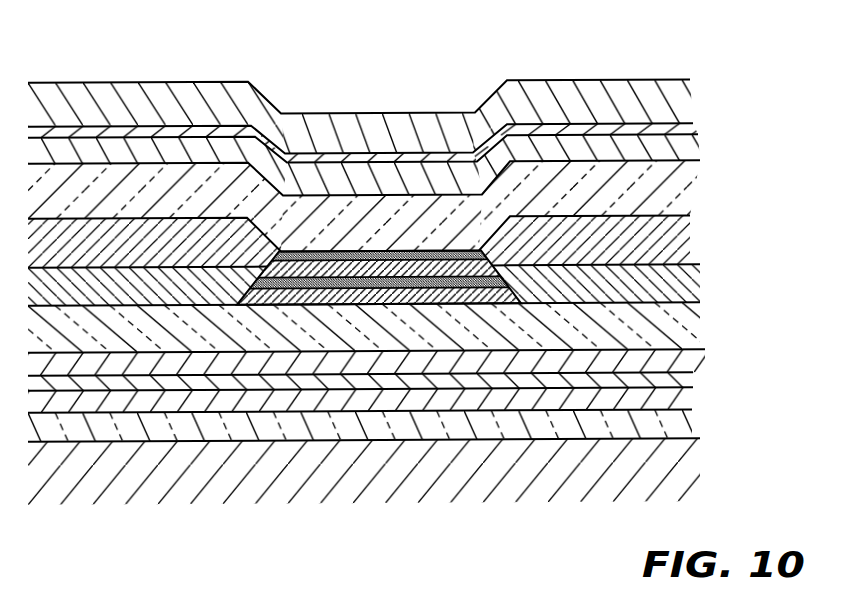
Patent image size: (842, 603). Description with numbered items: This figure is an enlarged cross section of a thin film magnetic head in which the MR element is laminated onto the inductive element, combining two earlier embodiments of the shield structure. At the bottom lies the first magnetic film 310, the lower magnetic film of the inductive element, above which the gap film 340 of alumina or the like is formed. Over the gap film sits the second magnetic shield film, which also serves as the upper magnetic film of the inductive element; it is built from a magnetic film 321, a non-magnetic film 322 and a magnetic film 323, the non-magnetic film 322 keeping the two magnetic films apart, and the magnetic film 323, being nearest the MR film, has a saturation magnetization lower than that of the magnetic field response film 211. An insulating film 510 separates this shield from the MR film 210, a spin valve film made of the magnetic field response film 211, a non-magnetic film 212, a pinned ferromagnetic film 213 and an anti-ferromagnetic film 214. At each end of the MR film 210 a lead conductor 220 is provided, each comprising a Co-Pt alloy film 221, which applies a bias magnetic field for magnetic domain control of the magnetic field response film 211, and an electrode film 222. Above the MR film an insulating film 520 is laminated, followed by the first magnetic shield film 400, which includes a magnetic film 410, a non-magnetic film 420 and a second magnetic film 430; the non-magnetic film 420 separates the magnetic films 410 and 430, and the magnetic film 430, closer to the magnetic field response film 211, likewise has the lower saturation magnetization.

The first magnetic shield film 400 is at (642, 68).
The magnetic film 410 is at (680, 97).
The non-magnetic film 420 is at (680, 130).
The second magnetic film 430 is at (680, 157).
The insulating film 520 is at (683, 197).
The lead conductor 220 is at (558, 217).
The Co-Pt alloy film 221 is at (688, 280).
The electrode film 222 is at (685, 238).
The MR film 210 is at (358, 251).
The magnetic field response film 211 is at (262, 291).
The non-magnetic film 212 is at (335, 280).
The pinned ferromagnetic film 213 is at (390, 268).
The anti-ferromagnetic film 214 is at (448, 256).
The insulating film 510 is at (690, 322).
The magnetic film 323 is at (698, 363).
The non-magnetic film 322 is at (700, 385).
The magnetic film 321 is at (687, 397).
The gap film 340 is at (693, 422).
The first magnetic film 310 is at (673, 477).